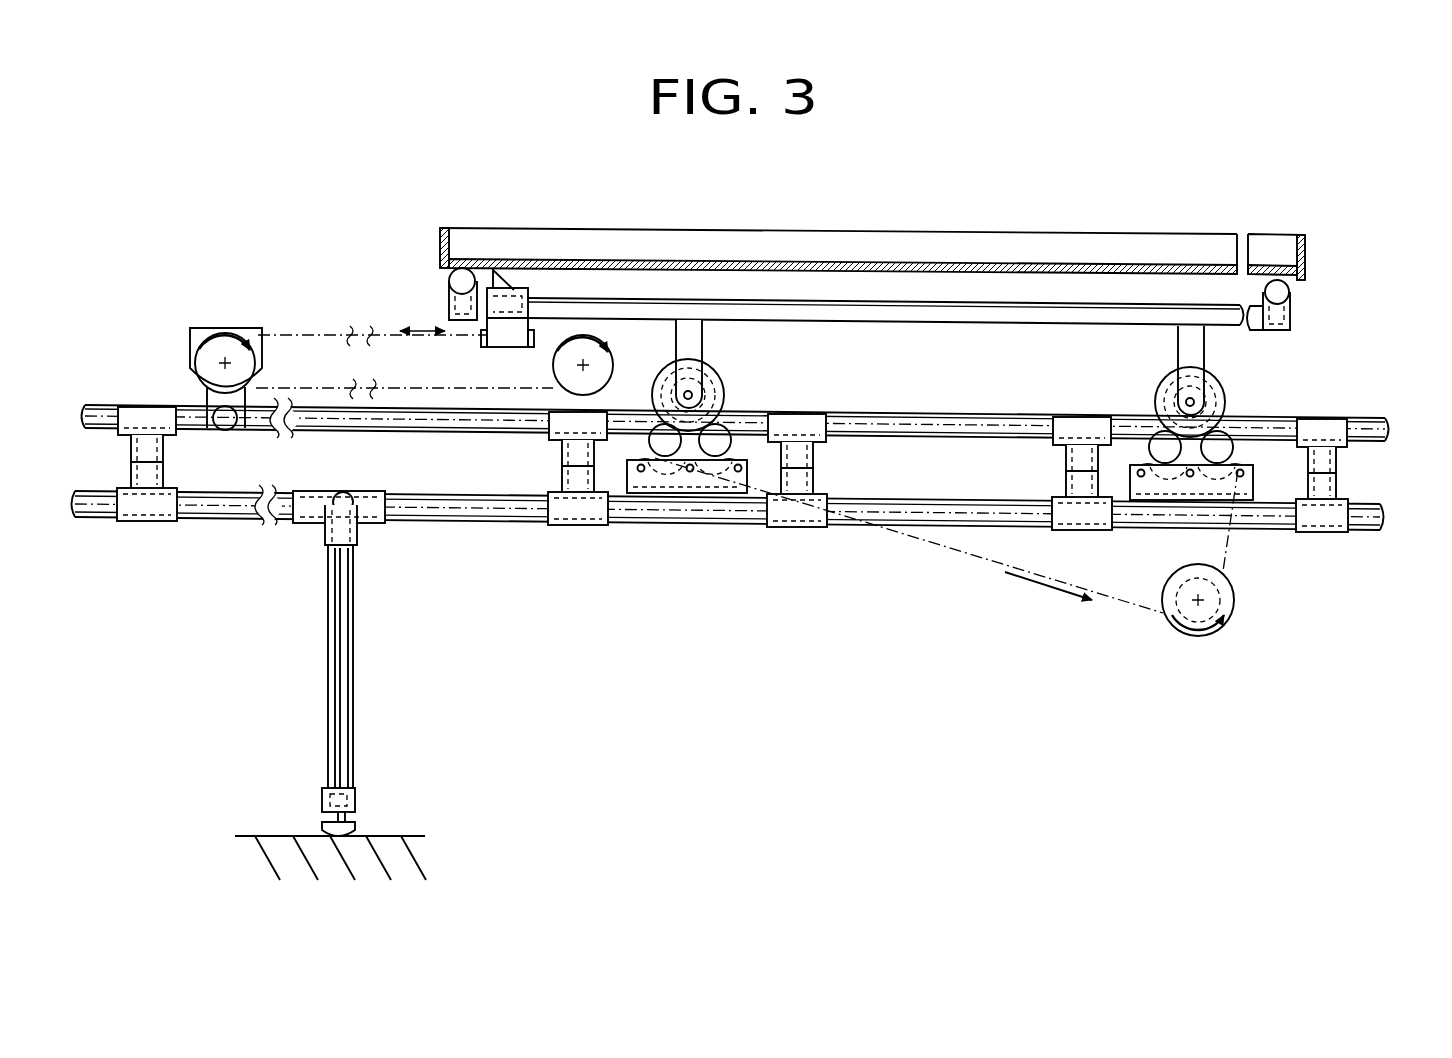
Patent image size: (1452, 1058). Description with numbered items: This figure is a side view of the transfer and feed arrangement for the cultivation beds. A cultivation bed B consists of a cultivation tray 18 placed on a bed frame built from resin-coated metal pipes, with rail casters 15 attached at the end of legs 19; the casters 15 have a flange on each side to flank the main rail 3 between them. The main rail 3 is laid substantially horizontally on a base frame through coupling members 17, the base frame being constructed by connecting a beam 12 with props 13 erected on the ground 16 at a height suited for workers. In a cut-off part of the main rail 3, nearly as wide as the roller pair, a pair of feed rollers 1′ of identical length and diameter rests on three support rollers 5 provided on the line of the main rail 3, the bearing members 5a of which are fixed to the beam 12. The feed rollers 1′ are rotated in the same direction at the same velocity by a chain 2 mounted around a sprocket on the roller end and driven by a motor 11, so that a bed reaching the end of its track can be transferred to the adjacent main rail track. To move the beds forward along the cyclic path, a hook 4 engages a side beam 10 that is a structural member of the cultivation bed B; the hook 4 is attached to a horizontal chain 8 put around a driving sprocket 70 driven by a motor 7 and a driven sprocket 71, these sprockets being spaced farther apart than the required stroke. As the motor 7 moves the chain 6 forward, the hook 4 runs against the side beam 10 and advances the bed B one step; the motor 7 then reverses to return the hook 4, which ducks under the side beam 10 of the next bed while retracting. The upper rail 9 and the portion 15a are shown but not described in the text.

The chain 2 is at (988, 564).
The main rail 3 is at (490, 429).
The hook 4 is at (512, 290).
The support roller 5 is at (768, 470).
The bearing member 5a is at (684, 494).
The chain 6 is at (318, 330).
The motor 7 is at (207, 330).
The horizontal chain 8 is at (487, 340).
The rail 9 is at (936, 313).
The side beam 10 is at (449, 283).
The motor 11 is at (1210, 637).
The beam 12 is at (497, 522).
The prop 13 is at (355, 632).
The rail caster 15 is at (735, 372).
The wheel axle 15a is at (1187, 401).
The ground 16 is at (388, 835).
The coupling member 17 is at (130, 450).
The cultivation tray 18 is at (806, 262).
The leg 19 is at (703, 345).
The driving sprocket 70 is at (195, 363).
The driven sprocket 71 is at (600, 340).
The feed roller 1′ is at (665, 424).
The cultivation bed B is at (1037, 214).